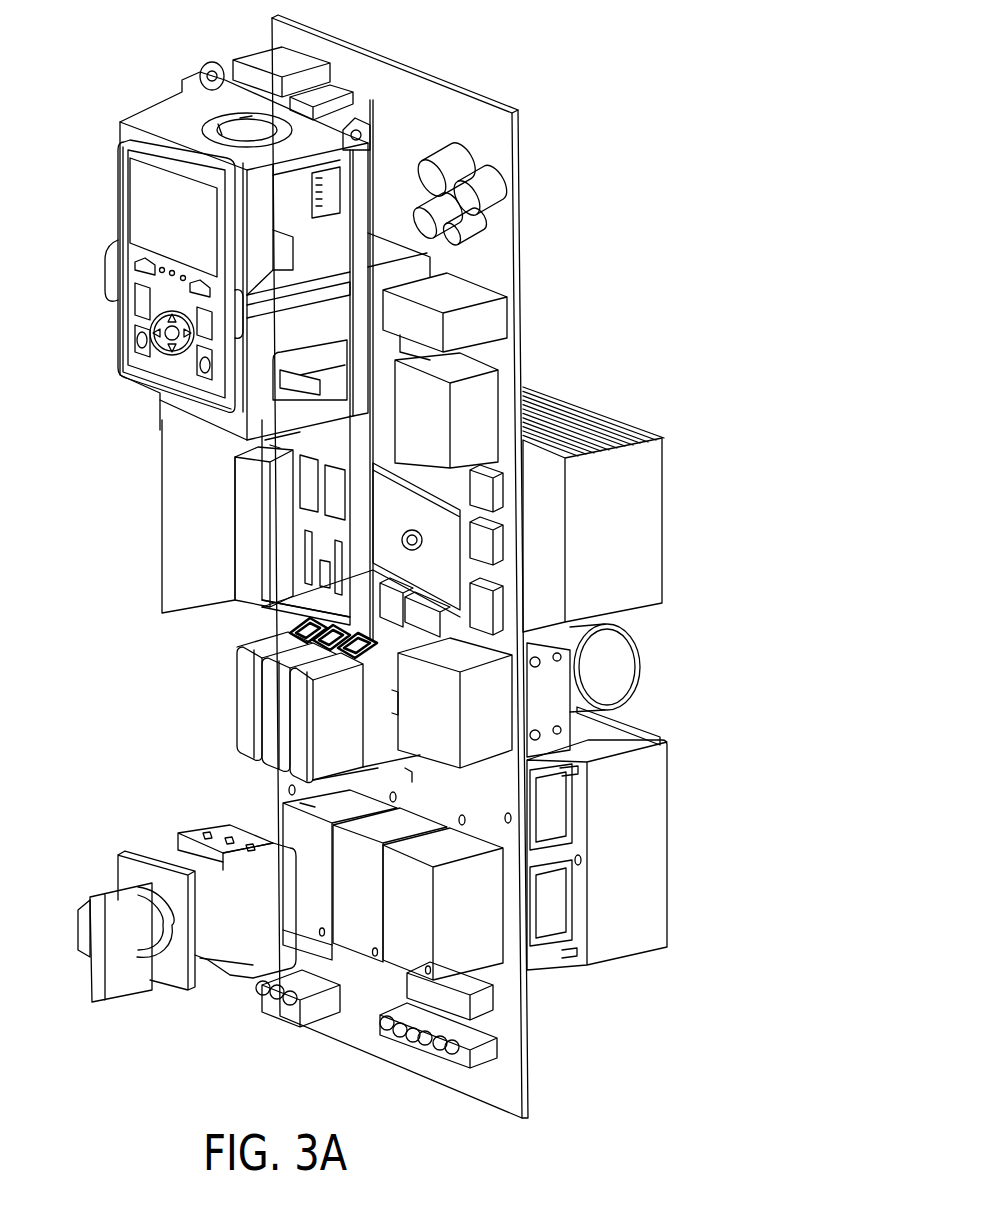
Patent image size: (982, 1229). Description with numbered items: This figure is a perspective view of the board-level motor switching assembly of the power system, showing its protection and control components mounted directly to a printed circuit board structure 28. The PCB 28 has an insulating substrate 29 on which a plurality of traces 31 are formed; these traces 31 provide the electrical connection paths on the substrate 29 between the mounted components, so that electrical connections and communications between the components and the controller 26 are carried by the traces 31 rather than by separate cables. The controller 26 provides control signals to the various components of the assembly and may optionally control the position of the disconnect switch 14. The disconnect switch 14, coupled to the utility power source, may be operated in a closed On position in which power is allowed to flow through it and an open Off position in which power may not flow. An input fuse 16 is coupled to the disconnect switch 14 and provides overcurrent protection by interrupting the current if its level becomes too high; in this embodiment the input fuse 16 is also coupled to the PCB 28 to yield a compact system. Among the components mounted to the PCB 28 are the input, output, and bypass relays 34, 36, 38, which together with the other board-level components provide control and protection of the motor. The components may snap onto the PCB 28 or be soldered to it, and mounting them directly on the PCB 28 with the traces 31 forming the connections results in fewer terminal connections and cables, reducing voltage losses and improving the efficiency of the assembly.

The disconnect switch 14 is at (172, 862).
The input fuse 16 is at (270, 722).
The controller 26 is at (480, 417).
The printed circuit board structure 28 is at (395, 107).
The insulating substrate 29 is at (500, 348).
The traces 31 is at (465, 628).
The input relay 34 is at (499, 258).
The output relay 36 is at (408, 948).
The bypass relay 38 is at (405, 264).